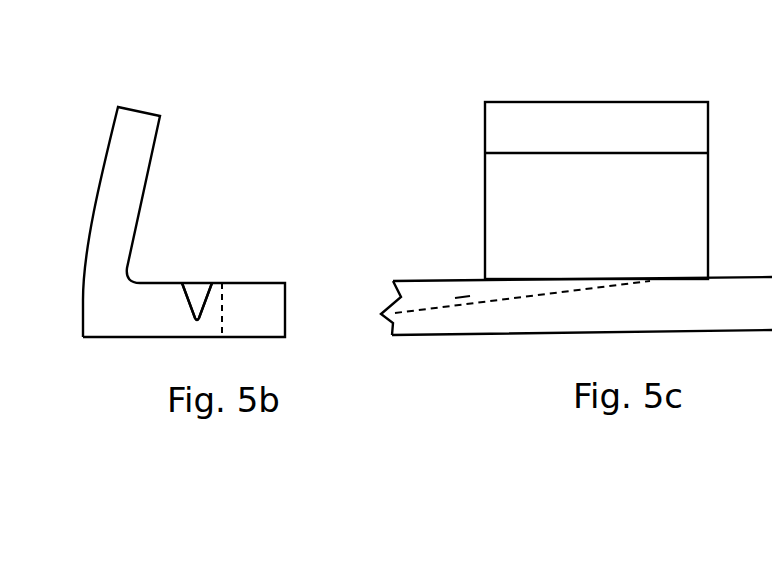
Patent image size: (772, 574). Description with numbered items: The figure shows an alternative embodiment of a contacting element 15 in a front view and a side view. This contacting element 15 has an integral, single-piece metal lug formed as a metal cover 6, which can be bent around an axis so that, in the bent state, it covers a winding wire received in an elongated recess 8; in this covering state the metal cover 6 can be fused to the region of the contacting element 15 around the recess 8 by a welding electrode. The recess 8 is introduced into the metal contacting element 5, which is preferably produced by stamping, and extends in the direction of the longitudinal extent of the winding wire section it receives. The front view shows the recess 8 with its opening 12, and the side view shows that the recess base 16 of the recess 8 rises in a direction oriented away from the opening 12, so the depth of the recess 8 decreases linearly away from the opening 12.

In FIG. 5C, the contacting element 5 is at (488, 320).
In FIG. 5B, the metal cover 6 is at (117, 167).
In FIG. 5C, the metal cover 6 is at (680, 198).
In FIG. 5B, the recess 8 is at (199, 280).
In FIG. 5C, the recess 8 is at (463, 293).
In FIG. 5B, the opening 12 is at (203, 297).
In FIG. 5B, the contacting element 15 is at (102, 320).
In FIG. 5C, the recess base 16 is at (462, 296).